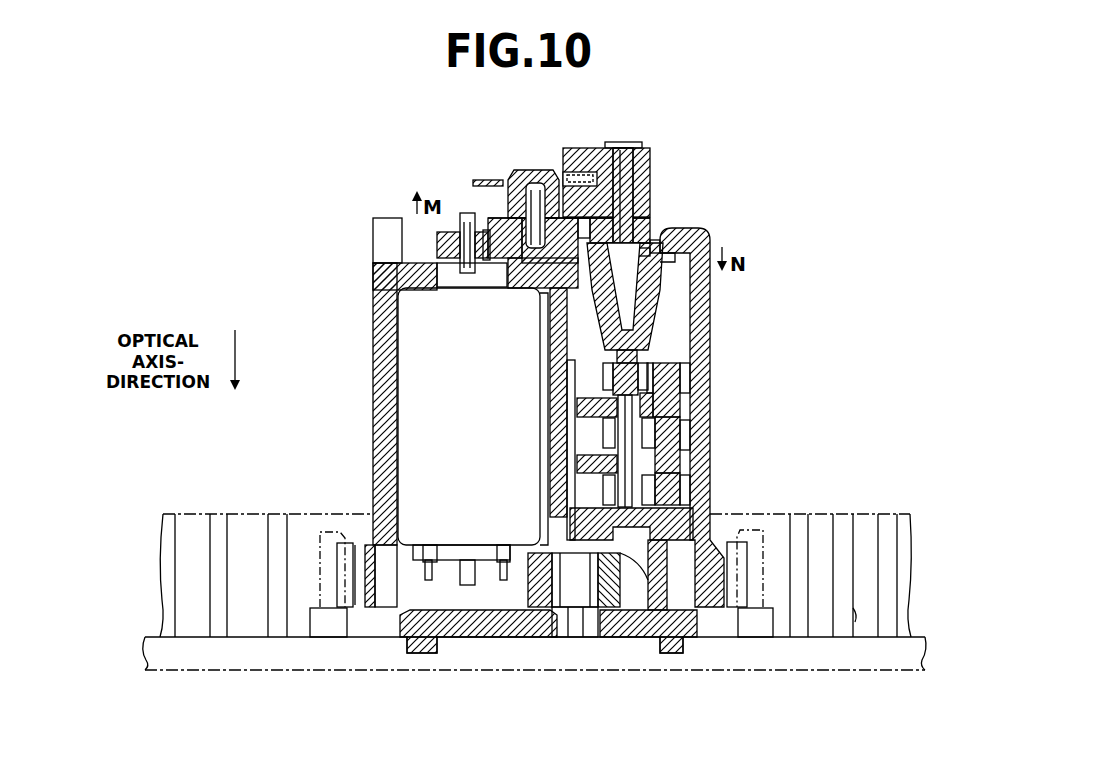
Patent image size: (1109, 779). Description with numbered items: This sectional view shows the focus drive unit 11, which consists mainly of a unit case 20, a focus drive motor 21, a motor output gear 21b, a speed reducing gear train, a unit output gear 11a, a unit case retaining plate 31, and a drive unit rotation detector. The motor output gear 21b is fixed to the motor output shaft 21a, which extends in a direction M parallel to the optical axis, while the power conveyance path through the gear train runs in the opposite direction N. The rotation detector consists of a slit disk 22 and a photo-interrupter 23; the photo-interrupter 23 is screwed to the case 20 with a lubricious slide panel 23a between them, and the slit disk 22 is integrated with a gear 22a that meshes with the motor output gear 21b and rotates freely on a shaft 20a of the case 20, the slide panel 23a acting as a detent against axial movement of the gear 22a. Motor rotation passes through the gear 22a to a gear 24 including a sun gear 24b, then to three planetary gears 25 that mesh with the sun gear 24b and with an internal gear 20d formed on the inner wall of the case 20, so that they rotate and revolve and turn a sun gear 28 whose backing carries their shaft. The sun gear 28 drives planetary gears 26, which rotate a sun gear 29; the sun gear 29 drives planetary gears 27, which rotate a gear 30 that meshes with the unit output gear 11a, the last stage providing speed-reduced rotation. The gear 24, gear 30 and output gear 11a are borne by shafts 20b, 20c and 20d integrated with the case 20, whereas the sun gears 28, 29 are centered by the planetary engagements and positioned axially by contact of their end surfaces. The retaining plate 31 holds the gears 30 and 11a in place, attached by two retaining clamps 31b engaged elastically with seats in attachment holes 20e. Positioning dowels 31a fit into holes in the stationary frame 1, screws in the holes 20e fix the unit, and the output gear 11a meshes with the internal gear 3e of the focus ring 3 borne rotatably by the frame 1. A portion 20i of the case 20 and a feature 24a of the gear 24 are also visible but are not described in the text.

The stationary frame 1 is at (873, 656).
The focus ring 3 is at (910, 514).
The internal gear 3e is at (855, 622).
The focus drive unit 11 is at (663, 130).
The unit output gear 11a is at (517, 587).
The unit case 20 is at (372, 312).
The shaft 20a is at (535, 183).
The shaft 20b is at (655, 240).
The shaft 20c is at (617, 560).
The internal gear 20d is at (567, 385).
The attachment holes 20e is at (337, 640).
The projection 20i is at (373, 257).
The focus drive motor 21 is at (405, 348).
The motor output shaft 21a is at (462, 213).
The motor output gear 21b is at (437, 245).
The slit disk 22 is at (490, 180).
The gear 22a is at (497, 218).
The photo-interrupter 23 is at (583, 148).
The slide panel 23a is at (642, 257).
The gear 24 is at (643, 325).
The gear flange 24a is at (672, 252).
The sun gear 24b is at (613, 363).
The planetary gears 25 is at (690, 383).
The planetary gears 26 is at (690, 430).
The planetary gears 27 is at (690, 490).
The sun gear 28 is at (607, 433).
The sun gear 29 is at (605, 495).
The gear 30 is at (657, 645).
The unit case retaining plate 31 is at (463, 627).
The positioning dowels 31a is at (421, 653).
The retaining clamps 31b is at (333, 532).